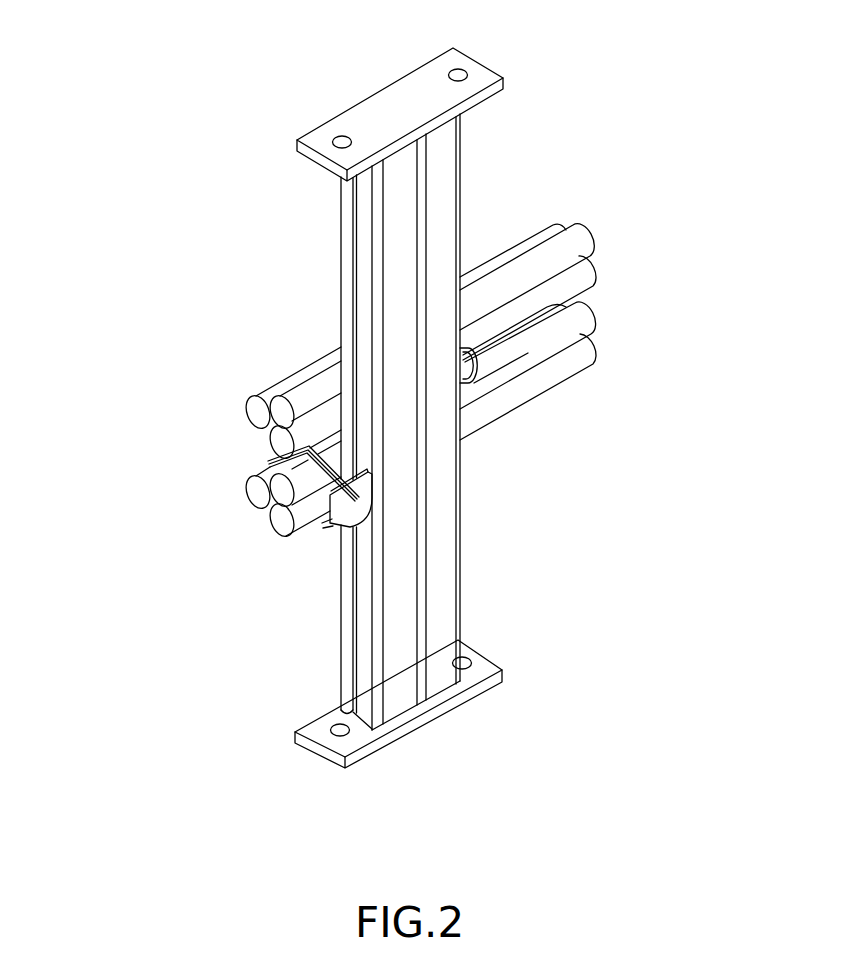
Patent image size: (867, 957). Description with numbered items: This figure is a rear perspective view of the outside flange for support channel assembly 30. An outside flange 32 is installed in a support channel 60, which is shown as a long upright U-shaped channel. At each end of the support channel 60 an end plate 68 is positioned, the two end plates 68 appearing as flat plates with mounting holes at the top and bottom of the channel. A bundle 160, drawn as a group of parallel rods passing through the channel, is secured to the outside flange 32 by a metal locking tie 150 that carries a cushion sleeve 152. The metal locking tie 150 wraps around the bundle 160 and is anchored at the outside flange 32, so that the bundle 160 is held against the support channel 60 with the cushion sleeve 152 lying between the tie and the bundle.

The outside flange for support channel assembly 30 is at (192, 364).
The outside flange 32 is at (343, 512).
The support channel 60 is at (346, 657).
The end plates 68 is at (425, 82).
The metal locking tie 150 is at (300, 448).
The cushion sleeve 152 is at (272, 522).
The bundle 160 is at (572, 245).